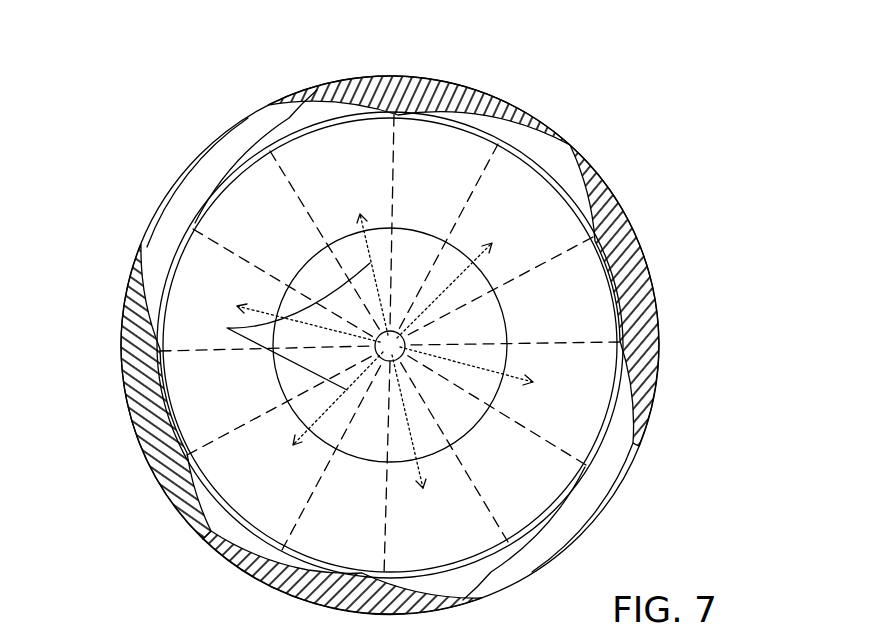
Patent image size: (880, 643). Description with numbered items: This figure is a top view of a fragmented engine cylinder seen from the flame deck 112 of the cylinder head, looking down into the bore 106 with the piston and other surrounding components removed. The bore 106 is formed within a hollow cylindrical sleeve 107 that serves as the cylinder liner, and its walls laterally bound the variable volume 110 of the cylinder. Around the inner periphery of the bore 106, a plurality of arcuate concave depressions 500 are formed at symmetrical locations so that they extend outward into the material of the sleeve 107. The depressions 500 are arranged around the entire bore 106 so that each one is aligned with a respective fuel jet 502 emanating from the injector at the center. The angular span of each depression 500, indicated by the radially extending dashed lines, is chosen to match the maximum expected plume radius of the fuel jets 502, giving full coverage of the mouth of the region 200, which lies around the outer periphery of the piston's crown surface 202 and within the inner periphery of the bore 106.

The variable volume 110 is at (440, 163).
The arcuate concave depressions 500 is at (346, 103).
The cylindrical sleeve 107 is at (215, 152).
The crown surface 202 is at (258, 222).
The region 200 is at (614, 262).
The bore 106 is at (628, 299).
The flame deck 112 is at (410, 333).
The fuel jets 502 is at (228, 328).